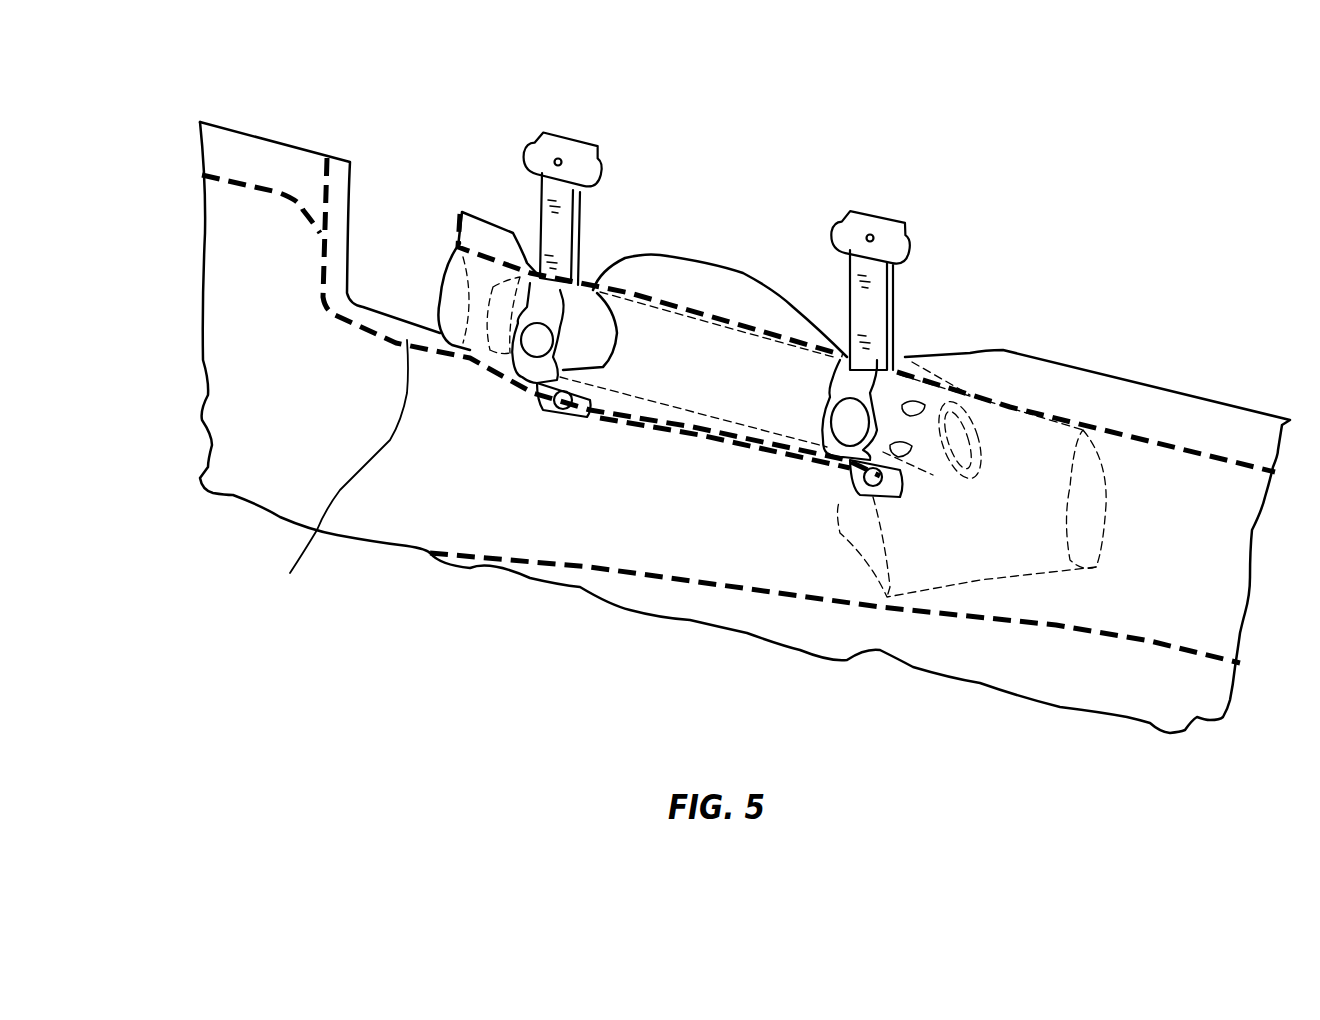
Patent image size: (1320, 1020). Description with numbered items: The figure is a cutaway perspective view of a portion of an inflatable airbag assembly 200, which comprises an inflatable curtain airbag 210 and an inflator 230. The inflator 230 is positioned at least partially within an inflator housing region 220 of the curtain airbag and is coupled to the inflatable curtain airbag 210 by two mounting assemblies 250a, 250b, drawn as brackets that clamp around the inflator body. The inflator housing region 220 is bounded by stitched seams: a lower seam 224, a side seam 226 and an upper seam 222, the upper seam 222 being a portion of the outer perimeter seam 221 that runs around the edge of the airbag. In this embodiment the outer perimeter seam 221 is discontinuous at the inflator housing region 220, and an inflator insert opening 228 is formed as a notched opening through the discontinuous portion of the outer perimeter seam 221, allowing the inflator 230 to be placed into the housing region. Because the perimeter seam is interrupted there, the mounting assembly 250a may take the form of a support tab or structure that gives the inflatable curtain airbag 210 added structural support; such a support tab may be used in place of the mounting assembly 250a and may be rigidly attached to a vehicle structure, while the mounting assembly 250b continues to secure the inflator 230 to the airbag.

The inflatable airbag assembly 200 is at (1237, 167).
The inflatable curtain airbag 210 is at (1157, 525).
The inflator housing region 220 is at (661, 365).
The outer perimeter seam 221 is at (247, 183).
The upper seam 222 is at (767, 332).
The lower seam 224 is at (290, 573).
The side seam 226 is at (322, 258).
The inflator insert opening 228 is at (405, 250).
The inflator 230 is at (693, 353).
The mounting assembly 250a is at (517, 204).
The mounting assembly 250b is at (947, 288).